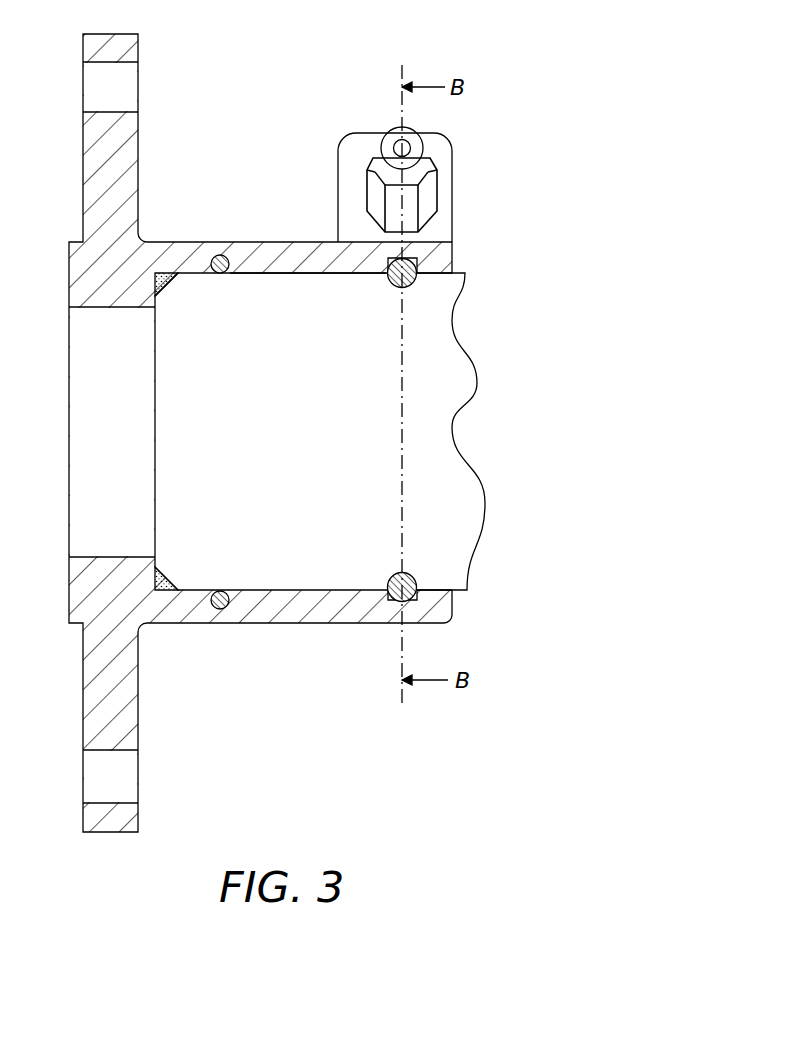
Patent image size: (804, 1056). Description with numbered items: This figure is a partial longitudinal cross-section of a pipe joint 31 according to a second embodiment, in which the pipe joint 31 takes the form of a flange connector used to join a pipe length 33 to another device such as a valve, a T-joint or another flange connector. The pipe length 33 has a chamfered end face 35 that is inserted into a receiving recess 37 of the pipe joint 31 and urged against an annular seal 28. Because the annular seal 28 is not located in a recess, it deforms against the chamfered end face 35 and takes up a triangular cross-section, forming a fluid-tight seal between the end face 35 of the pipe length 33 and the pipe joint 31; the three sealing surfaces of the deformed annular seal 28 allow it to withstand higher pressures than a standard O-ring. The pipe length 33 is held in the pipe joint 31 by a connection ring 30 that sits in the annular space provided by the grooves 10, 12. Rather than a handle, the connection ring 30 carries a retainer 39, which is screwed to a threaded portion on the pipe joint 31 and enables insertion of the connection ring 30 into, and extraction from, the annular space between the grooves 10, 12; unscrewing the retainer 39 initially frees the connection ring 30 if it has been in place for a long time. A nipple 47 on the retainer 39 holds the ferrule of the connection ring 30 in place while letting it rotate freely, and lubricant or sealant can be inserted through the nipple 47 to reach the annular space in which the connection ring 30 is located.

The groove 10 is at (390, 282).
The groove 12 is at (417, 263).
The annular seal 28 is at (173, 270).
The connection ring 30 is at (390, 577).
The pipe joint 31 is at (80, 583).
The pipe length 33 is at (432, 423).
The end face 35 is at (168, 284).
The receiving recess 37 is at (268, 276).
The retainer 39 is at (438, 185).
The nipple 47 is at (392, 140).